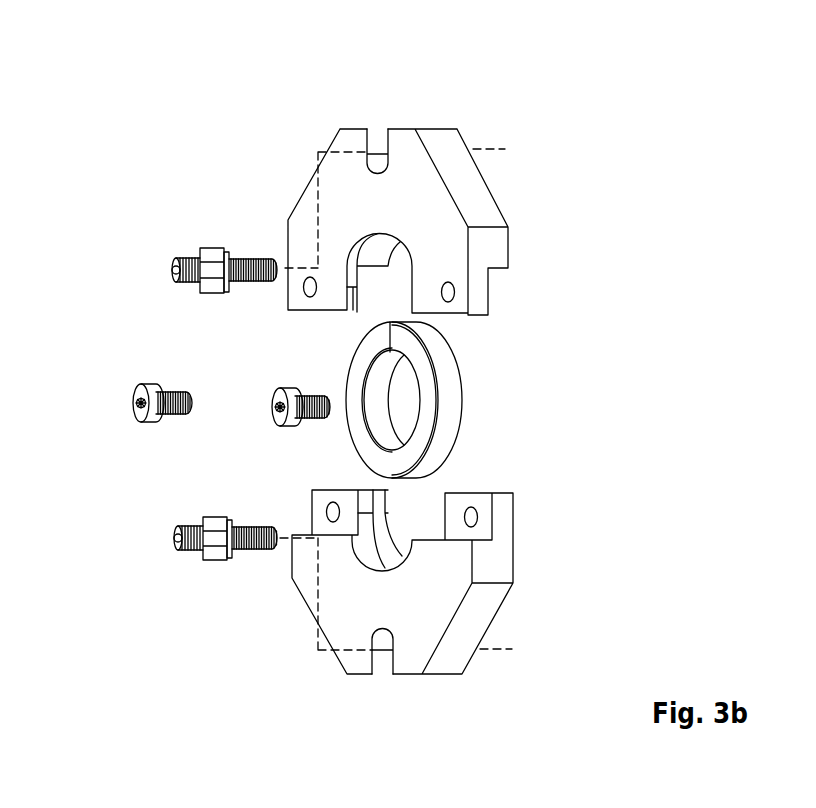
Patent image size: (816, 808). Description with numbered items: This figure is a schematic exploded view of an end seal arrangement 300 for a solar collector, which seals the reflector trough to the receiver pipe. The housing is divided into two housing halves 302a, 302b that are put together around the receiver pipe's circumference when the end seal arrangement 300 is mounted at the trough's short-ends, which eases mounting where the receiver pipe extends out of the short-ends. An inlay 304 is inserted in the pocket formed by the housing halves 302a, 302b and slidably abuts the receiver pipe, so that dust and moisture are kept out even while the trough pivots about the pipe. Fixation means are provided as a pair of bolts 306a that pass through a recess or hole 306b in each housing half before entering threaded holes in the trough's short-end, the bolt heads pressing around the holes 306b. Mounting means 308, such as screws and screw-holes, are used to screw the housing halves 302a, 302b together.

The end seal arrangement 300 is at (139, 76).
The housing half 302a is at (497, 235).
The housing half 302b is at (483, 558).
The inlay 304 is at (450, 378).
The bolts 306a is at (172, 264).
The recess or hole 306b is at (383, 140).
The mounting means 308 is at (134, 403).